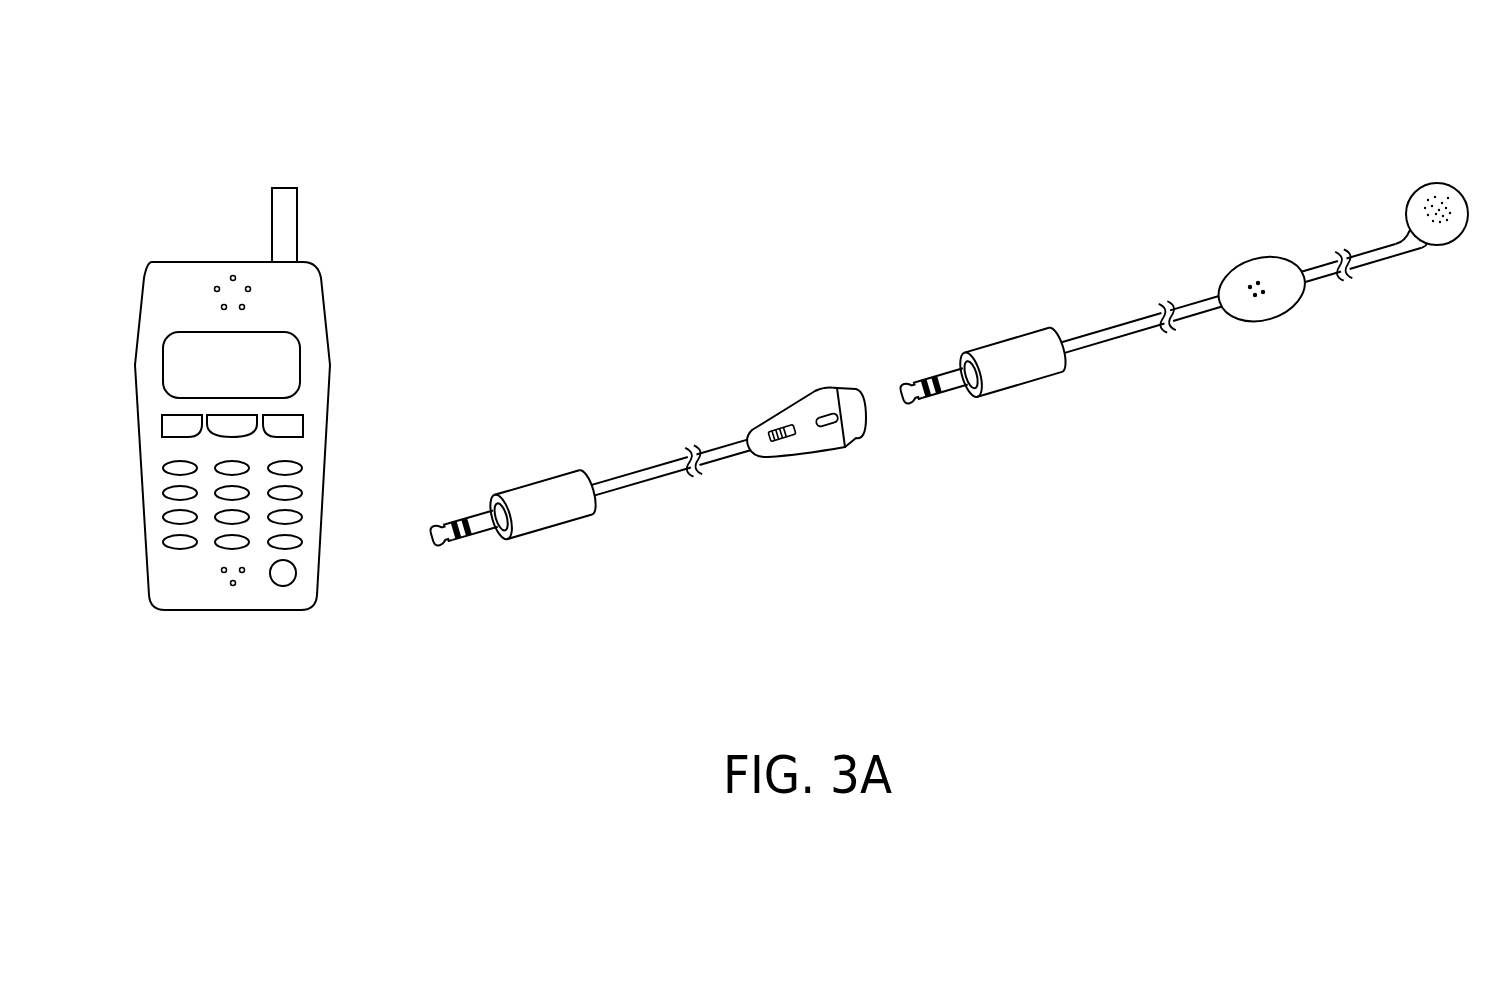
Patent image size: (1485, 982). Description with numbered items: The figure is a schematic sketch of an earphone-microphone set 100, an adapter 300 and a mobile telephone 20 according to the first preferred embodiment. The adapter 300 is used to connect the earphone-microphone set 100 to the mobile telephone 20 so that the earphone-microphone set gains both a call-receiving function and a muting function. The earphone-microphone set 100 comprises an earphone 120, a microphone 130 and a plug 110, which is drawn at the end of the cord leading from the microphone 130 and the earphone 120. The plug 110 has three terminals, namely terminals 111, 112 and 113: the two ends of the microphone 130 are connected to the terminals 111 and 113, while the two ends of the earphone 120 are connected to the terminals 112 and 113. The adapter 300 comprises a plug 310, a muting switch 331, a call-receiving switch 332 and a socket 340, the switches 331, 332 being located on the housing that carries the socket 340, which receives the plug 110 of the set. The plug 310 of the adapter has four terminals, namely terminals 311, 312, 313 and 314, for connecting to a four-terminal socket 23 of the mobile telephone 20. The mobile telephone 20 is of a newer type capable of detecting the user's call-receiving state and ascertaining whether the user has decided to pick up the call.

The mobile telephone 20 is at (215, 610).
The four-terminal socket 23 is at (285, 586).
The earphone-microphone set 100 is at (1140, 187).
The plug 110 is at (1048, 326).
The terminal 111 is at (917, 402).
The terminal 112 is at (935, 398).
The terminal 113 is at (955, 393).
The earphone 120 is at (1452, 247).
The microphone 130 is at (1255, 297).
The adapter 300 is at (648, 343).
The plug 310 is at (578, 469).
The terminal 311 is at (441, 548).
The terminal 312 is at (466, 544).
The terminal 313 is at (484, 543).
The terminal 314 is at (508, 546).
The muting switch 331 is at (784, 443).
The call-receiving switch 332 is at (833, 426).
The socket 340 is at (843, 388).